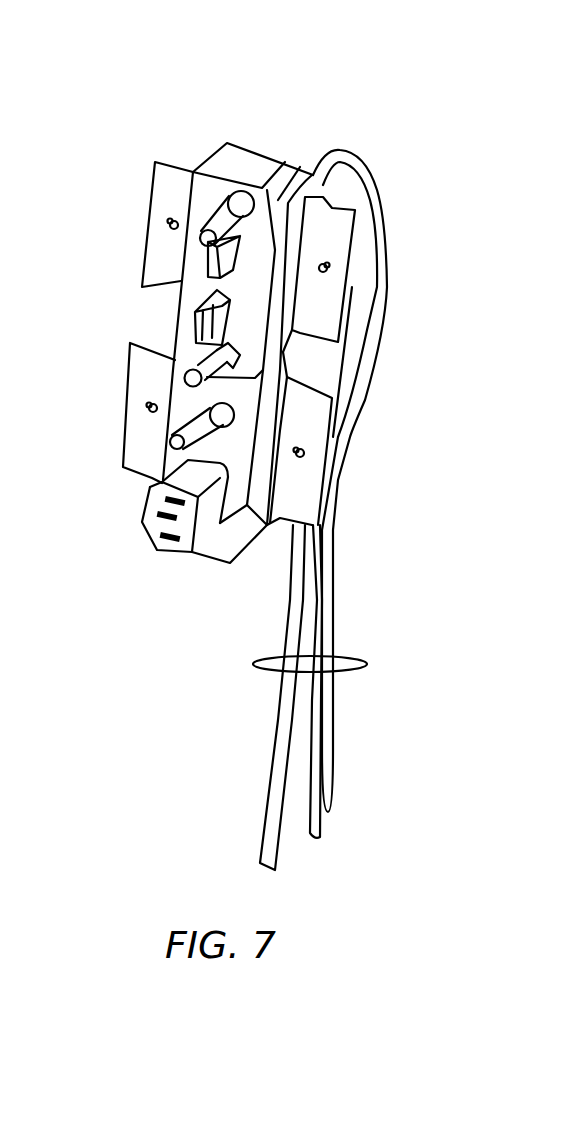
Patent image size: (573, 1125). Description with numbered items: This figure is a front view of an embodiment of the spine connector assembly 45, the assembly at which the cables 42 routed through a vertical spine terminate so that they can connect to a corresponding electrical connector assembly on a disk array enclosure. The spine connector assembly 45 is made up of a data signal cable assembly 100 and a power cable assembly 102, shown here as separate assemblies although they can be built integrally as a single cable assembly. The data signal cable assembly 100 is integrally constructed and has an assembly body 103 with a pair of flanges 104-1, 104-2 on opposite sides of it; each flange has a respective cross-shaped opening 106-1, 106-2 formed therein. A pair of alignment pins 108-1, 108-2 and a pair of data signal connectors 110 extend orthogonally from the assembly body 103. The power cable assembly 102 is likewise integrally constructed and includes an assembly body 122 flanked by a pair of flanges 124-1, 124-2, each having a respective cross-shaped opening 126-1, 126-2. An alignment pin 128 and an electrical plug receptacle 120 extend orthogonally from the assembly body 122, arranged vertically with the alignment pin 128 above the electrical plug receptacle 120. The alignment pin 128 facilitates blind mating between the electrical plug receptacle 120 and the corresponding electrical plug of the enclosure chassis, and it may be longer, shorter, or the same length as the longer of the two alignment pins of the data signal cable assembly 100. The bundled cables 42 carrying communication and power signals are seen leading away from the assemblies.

The spine connector assembly 45 is at (310, 100).
The data signal cable assembly 100 is at (203, 148).
The power cable assembly 102 is at (137, 535).
The assembly body 103 is at (270, 290).
The flange 104-1 is at (155, 248).
The flange 104-2 is at (328, 305).
The cross-shaped opening 106-1 is at (170, 223).
The cross-shaped opening 106-2 is at (327, 263).
The alignment pin 108-1 is at (222, 220).
The alignment pin 108-2 is at (190, 377).
The data signal connectors 110 is at (195, 305).
The electrical plug receptacle 120 is at (152, 502).
The assembly body 122 is at (253, 404).
The flange 124-1 is at (127, 460).
The flange 124-2 is at (308, 492).
The cross-shaped opening 126-1 is at (150, 407).
The cross-shaped opening 126-2 is at (303, 453).
The alignment pin 128 is at (170, 440).
The cables 42 is at (367, 663).